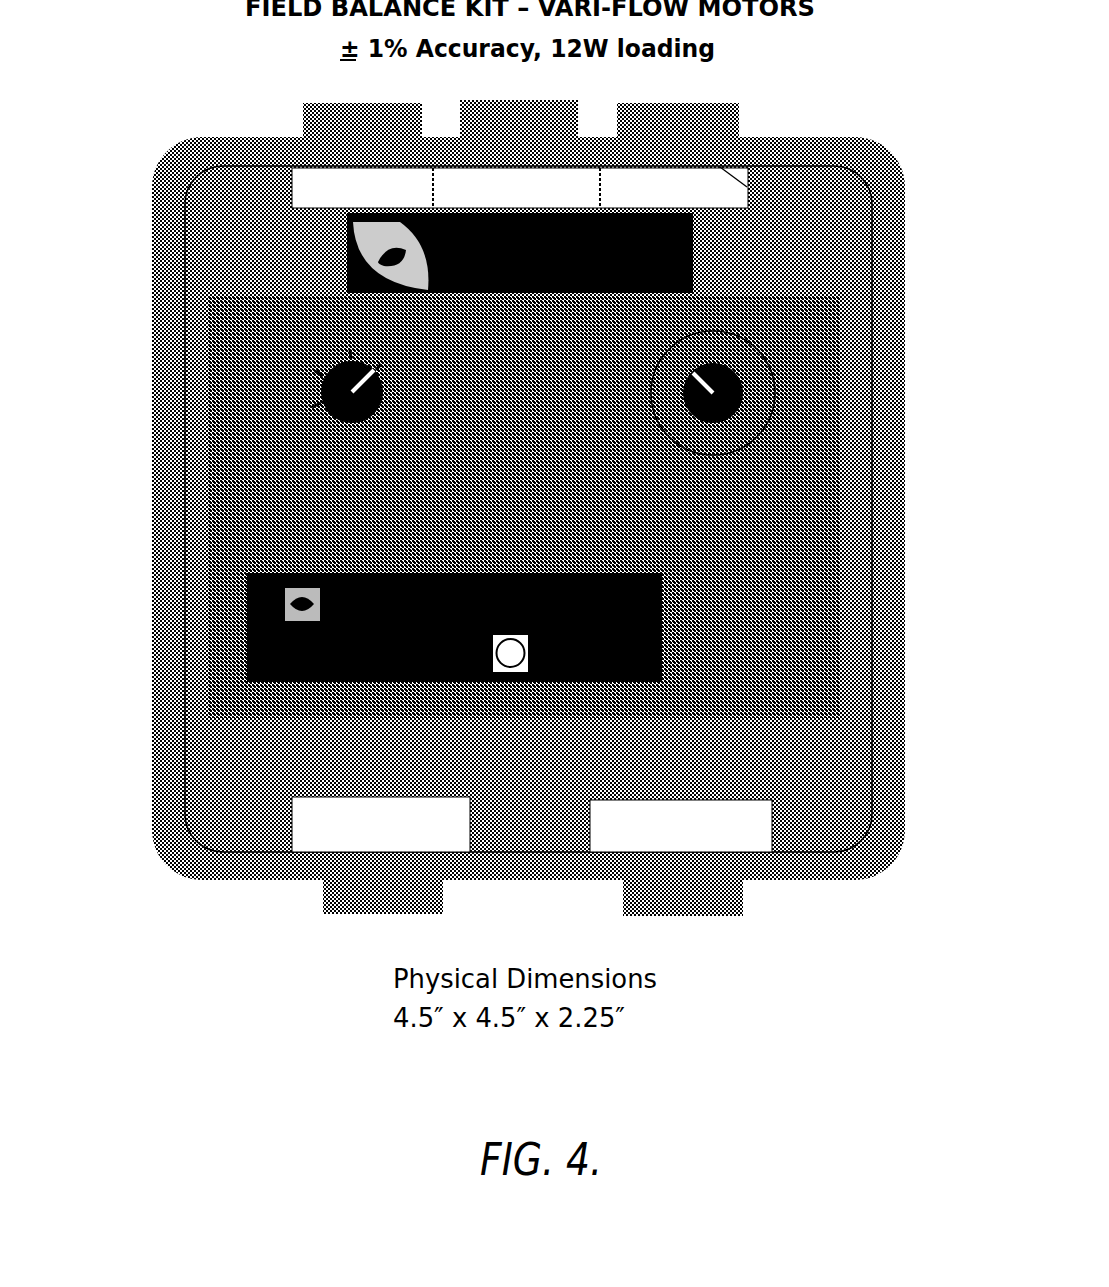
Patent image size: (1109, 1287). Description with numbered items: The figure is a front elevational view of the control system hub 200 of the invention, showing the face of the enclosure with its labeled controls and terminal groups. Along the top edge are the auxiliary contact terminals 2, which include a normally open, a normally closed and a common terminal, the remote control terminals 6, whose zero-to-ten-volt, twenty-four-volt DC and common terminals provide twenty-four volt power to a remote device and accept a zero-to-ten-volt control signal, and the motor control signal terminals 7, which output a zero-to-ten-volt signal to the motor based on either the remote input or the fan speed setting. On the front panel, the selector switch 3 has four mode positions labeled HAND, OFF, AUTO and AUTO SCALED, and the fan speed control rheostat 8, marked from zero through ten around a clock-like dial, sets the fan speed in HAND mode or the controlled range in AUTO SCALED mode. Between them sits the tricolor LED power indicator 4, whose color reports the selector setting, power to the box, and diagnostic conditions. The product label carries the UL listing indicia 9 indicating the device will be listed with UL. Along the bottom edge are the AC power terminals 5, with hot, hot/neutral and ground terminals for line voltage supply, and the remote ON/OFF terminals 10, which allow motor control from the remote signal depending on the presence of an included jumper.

The auxiliary contact terminals 2 is at (300, 118).
The selector switch 3 is at (320, 388).
The LED power indicator 4 is at (520, 517).
The AC power terminals 5 is at (323, 895).
The remote control terminals 6 is at (525, 107).
The motor control signal terminals 7 is at (905, 290).
The fan speed control rheostat 8 is at (745, 395).
The UL listing indicia 9 is at (647, 662).
The remote ON/OFF terminals 10 is at (905, 800).
The control system hub 200 is at (525, 545).